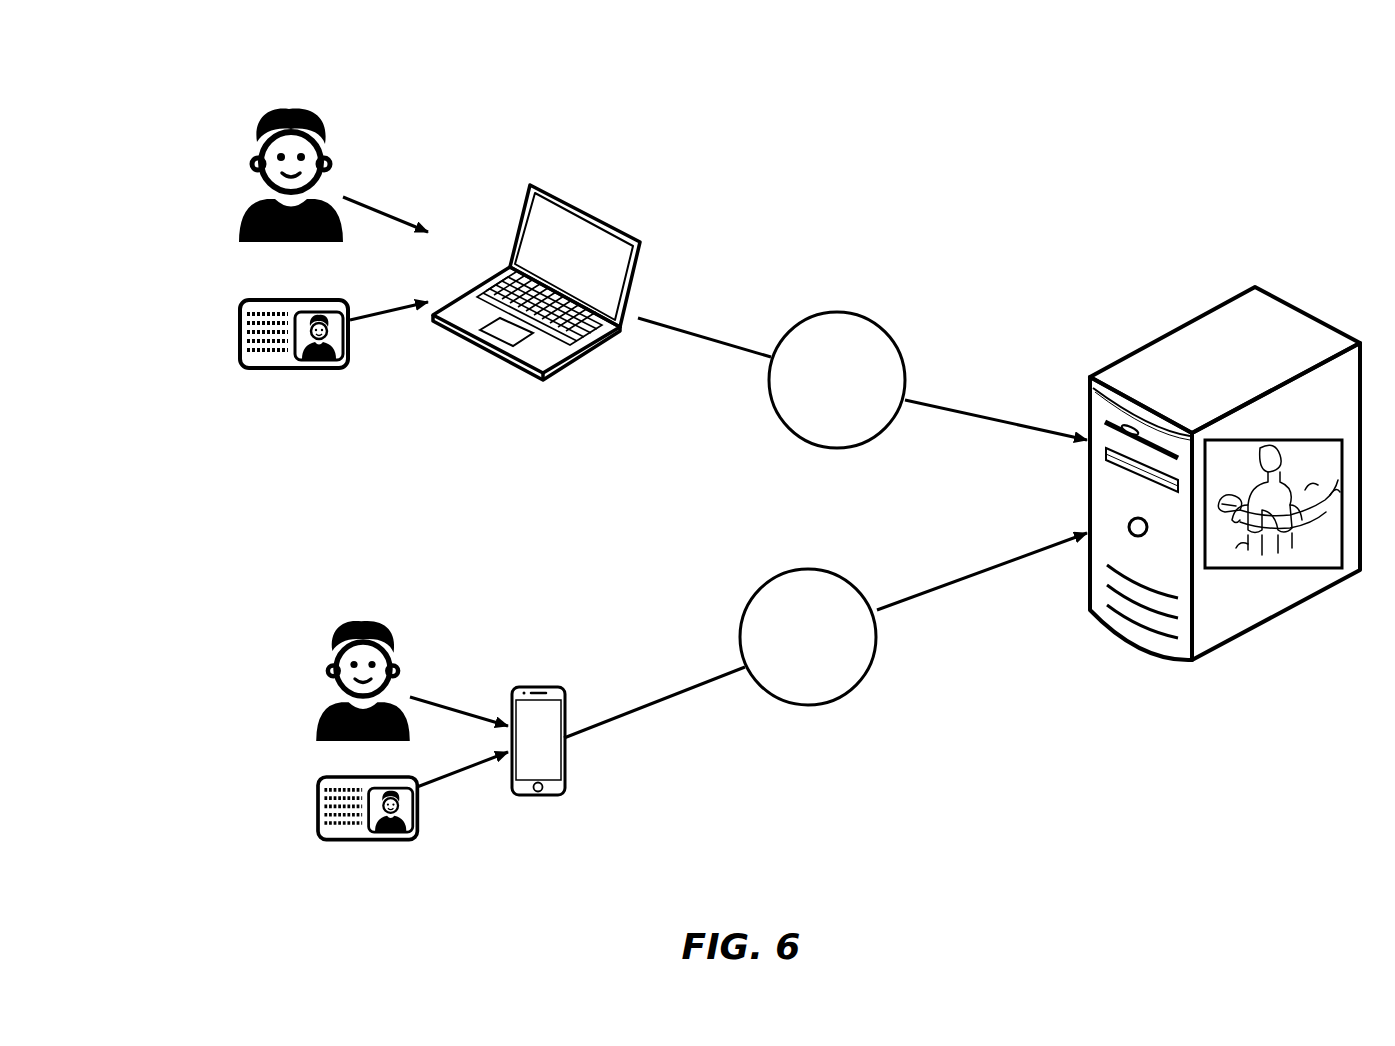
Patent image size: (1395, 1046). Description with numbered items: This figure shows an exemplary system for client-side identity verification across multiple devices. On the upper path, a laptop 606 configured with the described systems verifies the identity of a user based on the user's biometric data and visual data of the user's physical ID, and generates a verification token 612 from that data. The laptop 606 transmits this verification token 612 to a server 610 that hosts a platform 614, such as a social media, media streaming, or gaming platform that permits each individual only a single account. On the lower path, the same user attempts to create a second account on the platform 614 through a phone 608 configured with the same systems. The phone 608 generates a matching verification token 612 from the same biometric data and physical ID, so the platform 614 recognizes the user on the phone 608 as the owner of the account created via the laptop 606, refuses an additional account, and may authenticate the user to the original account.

The laptop 606 is at (624, 212).
The phone 608 is at (570, 669).
The server 610 is at (1320, 303).
The verification token 612 is at (822, 508).
The platform 614 is at (1259, 582).